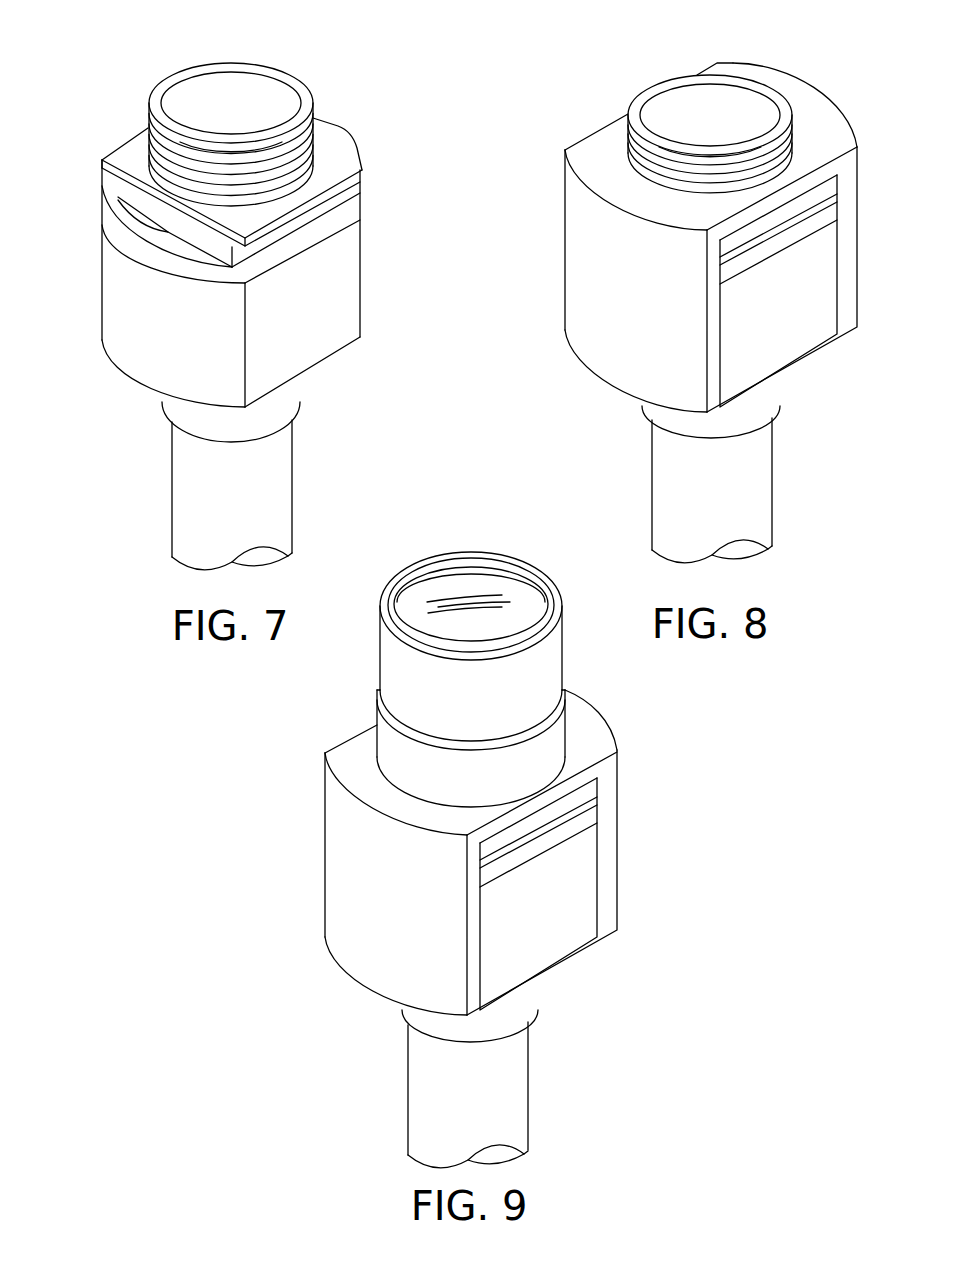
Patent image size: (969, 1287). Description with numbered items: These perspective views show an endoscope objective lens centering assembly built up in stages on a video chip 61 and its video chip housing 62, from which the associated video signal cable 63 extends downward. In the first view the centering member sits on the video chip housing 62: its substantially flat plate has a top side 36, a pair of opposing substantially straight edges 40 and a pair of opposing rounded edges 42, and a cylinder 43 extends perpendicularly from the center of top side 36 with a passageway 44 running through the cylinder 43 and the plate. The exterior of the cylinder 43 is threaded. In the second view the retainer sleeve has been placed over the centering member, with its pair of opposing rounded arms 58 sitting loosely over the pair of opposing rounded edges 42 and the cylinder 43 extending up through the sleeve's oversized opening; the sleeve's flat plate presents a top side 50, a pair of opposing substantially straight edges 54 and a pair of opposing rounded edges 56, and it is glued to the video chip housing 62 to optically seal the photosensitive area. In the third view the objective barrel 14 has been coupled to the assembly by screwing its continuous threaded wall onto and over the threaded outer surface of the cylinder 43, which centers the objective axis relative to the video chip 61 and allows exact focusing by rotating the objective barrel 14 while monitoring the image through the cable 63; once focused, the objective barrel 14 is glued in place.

In FIG. 9, the objective barrel 14 is at (468, 554).
In FIG. 7, the top side 36 is at (318, 166).
In FIG. 7, the pair of opposing substantially straight edges 40 is at (127, 140).
In FIG. 7, the pair of opposing rounded edges 42 is at (347, 128).
In FIG. 7, the cylinder 43 is at (278, 75).
In FIG. 8, the cylinder 43 is at (743, 80).
In FIG. 7, the passageway 44 is at (233, 135).
In FIG. 8, the passageway 44 is at (710, 145).
In FIG. 8, the top side 50 is at (588, 181).
In FIG. 9, the top side 50 is at (338, 781).
In FIG. 8, the pair of opposing substantially straight edges 54 is at (808, 182).
In FIG. 8, the pair of opposing rounded edges 56 is at (810, 83).
In FIG. 8, the pair of opposing rounded arms 58 is at (625, 318).
In FIG. 9, the pair of opposing rounded arms 58 is at (369, 930).
In FIG. 7, the video chip 61 is at (218, 248).
In FIG. 7, the video chip housing 62 is at (282, 337).
In FIG. 8, the video chip housing 62 is at (770, 326).
In FIG. 9, the video chip housing 62 is at (529, 930).
In FIG. 7, the video signal cable 63 is at (215, 507).
In FIG. 8, the video signal cable 63 is at (697, 507).
In FIG. 9, the video signal cable 63 is at (455, 1104).